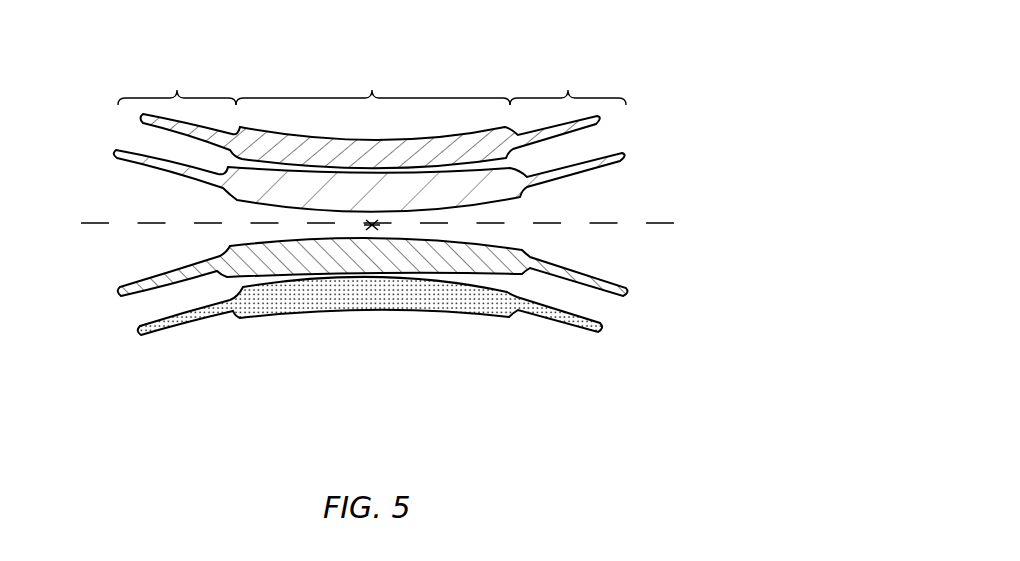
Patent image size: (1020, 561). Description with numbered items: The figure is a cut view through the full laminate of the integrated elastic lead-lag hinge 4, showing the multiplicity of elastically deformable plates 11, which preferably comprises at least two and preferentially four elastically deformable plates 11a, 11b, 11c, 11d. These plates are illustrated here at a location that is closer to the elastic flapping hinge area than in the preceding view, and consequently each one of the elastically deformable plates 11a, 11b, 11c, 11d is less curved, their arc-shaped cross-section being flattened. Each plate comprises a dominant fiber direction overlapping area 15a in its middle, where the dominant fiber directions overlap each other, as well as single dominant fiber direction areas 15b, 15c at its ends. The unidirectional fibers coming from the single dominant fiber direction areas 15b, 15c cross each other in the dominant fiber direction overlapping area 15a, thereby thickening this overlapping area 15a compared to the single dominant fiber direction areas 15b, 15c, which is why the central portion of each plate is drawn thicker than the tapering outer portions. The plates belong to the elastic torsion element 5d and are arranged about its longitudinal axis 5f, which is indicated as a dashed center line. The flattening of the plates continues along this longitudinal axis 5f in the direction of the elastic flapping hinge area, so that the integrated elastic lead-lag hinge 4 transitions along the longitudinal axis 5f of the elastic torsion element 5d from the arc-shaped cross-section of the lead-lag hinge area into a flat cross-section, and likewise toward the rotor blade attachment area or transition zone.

The multiplicity of elastically deformable plates 11 is at (373, 236).
The elastically deformable plate 11a is at (138, 116).
The elastically deformable plate 11b is at (113, 153).
The elastically deformable plate 11c is at (113, 290).
The elastically deformable plate 11d is at (137, 330).
The dominant fiber direction overlapping area 15a is at (373, 84).
The single dominant fiber direction area 15b is at (177, 84).
The single dominant fiber direction area 15c is at (568, 84).
The elastic torsion element 5d is at (300, 62).
The longitudinal axis 5f is at (382, 225).
The integrated elastic lead-lag hinge 4 is at (385, 333).